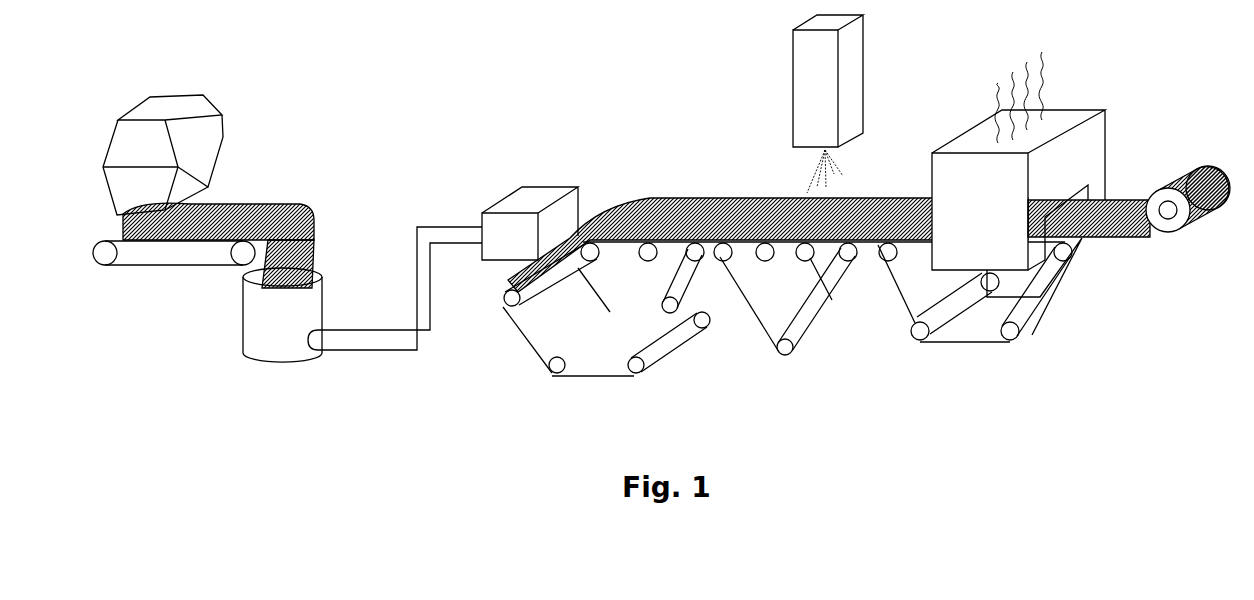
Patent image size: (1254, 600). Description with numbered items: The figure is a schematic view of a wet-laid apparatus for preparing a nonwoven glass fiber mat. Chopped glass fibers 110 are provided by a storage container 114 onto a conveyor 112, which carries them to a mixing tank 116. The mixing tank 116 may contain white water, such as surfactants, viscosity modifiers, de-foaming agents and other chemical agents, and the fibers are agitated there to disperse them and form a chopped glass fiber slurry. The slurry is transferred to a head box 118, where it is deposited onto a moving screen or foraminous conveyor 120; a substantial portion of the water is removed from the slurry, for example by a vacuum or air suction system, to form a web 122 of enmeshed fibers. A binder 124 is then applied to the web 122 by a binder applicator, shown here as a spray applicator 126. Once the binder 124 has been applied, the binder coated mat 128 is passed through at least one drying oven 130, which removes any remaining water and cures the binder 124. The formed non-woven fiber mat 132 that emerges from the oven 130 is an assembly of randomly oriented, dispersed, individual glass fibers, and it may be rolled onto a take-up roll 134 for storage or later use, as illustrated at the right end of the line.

The chopped glass fibers 110 is at (233, 203).
The conveyor 112 is at (177, 270).
The storage container 114 is at (213, 113).
The mixing tank 116 is at (323, 303).
The head box 118 is at (515, 202).
The foraminous conveyor 120 is at (525, 337).
The web 122 is at (660, 198).
The binder 124 is at (810, 173).
The spray applicator 126 is at (800, 73).
The binder coated mat 128 is at (873, 197).
The drying oven 130 is at (1060, 107).
The non-woven fiber mat 132 is at (1108, 200).
The take-up roll 134 is at (1190, 163).